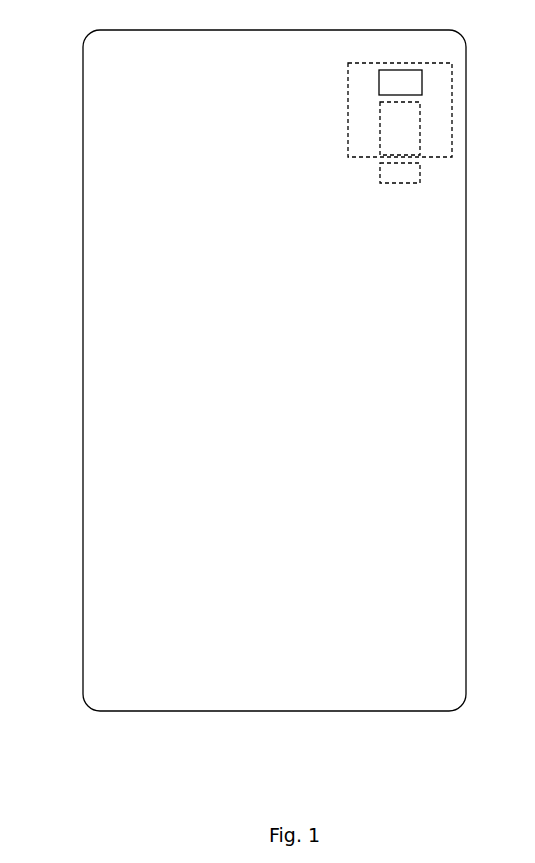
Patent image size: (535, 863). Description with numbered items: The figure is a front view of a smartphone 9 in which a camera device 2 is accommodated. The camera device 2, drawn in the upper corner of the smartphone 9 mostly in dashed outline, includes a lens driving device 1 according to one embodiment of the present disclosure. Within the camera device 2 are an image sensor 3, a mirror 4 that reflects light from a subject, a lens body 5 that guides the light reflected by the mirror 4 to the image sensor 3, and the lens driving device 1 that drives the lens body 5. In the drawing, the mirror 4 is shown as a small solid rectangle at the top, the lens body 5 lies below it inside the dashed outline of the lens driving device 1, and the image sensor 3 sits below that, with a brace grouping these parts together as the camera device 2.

The smartphone 9 is at (83, 480).
The lens driving device 1 is at (452, 104).
The camera device 2 is at (490, 88).
The image sensor 3 is at (420, 173).
The mirror 4 is at (422, 83).
The lens body 5 is at (414, 125).